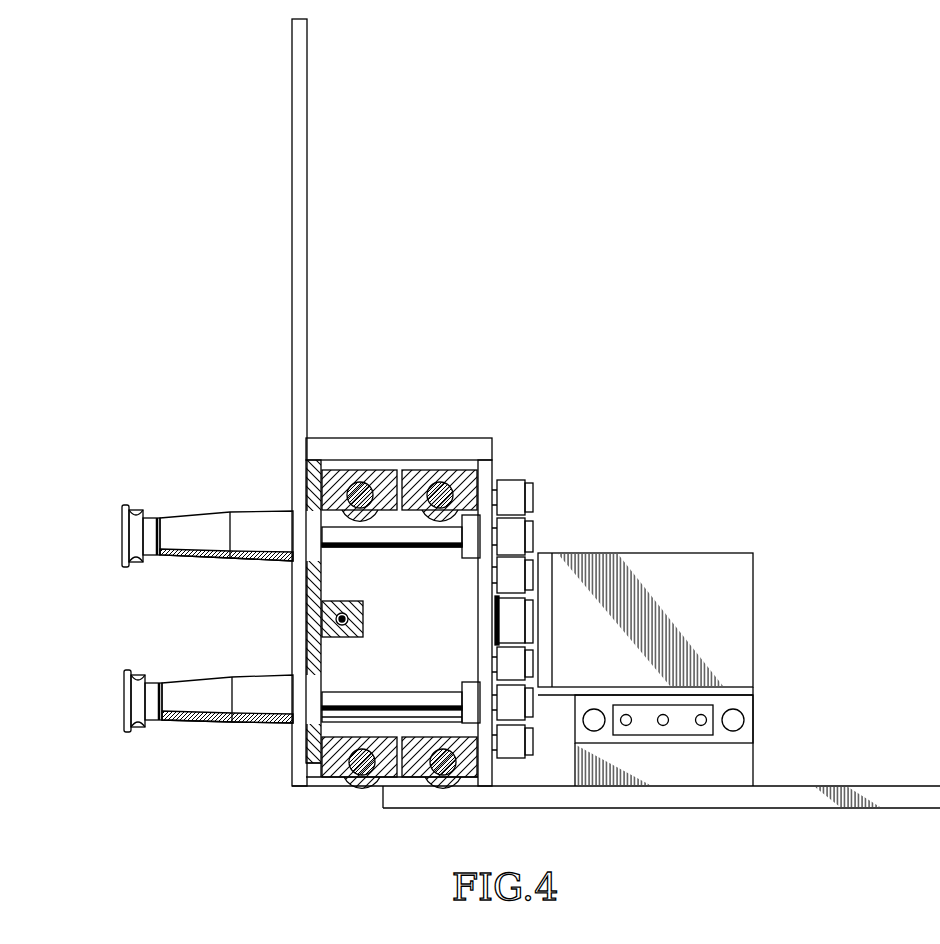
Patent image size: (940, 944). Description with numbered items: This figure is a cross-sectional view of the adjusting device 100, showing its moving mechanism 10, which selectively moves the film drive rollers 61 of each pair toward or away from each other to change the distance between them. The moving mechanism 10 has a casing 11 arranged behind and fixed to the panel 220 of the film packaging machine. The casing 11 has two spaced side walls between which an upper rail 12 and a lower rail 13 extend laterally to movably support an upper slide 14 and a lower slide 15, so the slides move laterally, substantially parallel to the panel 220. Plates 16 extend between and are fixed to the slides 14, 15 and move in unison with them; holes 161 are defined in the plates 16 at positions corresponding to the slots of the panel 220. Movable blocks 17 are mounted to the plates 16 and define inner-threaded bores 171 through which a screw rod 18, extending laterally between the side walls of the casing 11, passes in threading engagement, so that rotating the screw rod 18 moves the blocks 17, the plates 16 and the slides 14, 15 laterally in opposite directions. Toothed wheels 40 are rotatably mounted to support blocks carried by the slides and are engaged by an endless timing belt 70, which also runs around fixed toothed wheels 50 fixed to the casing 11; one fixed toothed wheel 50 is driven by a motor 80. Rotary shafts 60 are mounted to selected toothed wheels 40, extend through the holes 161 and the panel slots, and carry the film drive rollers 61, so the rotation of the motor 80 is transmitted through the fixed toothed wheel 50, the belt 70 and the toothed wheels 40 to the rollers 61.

The adjusting device 100 is at (748, 238).
The moving mechanism 10 is at (441, 347).
The casing 11 is at (322, 450).
The upper rail 12 is at (368, 482).
The lower rail 13 is at (368, 777).
The upper slide 14 is at (345, 488).
The lower slide 15 is at (333, 770).
The plate 16 is at (322, 583).
The movable block 17 is at (323, 633).
The screw rod 18 is at (322, 617).
The toothed wheel 40 is at (510, 490).
The fixed toothed wheel 50 is at (507, 622).
The rotary shaft 60 is at (307, 566).
The film drive roller 61 is at (181, 528).
The timing belt 70 is at (528, 632).
The motor 80 is at (695, 573).
The hole 161 is at (308, 527).
The inner-threaded bore 171 is at (365, 614).
The panel 220 is at (299, 183).